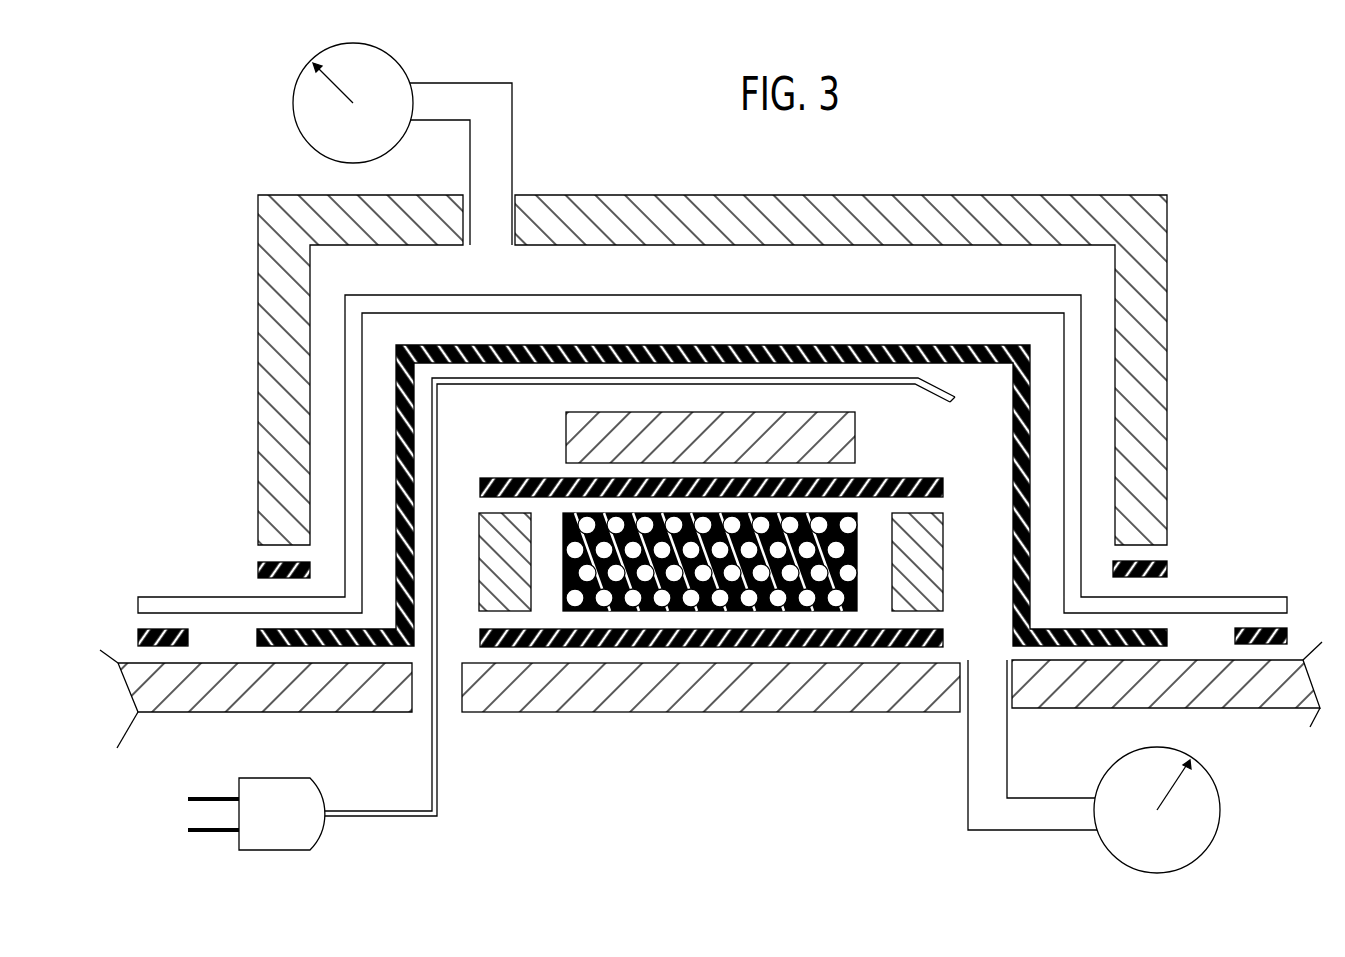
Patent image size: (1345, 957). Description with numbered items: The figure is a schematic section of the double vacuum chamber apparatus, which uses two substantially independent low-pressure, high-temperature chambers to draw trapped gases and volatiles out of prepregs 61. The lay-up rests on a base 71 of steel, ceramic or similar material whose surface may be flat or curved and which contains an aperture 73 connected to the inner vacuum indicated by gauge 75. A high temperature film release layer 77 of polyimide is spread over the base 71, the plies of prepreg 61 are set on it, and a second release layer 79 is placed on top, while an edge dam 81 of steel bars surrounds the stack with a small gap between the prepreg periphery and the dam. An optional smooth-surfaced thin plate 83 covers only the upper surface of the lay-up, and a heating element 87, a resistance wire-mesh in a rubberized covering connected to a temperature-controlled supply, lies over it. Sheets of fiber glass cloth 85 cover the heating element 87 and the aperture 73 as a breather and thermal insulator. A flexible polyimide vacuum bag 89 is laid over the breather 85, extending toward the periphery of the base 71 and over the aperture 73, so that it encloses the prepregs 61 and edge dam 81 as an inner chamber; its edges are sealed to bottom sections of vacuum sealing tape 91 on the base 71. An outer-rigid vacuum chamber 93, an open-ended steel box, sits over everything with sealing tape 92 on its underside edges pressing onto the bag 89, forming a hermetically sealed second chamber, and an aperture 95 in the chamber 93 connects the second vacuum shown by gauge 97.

The prepregs 61 is at (790, 600).
The base 71 is at (612, 712).
The aperture 73 is at (1007, 688).
The gauge 75 is at (1222, 792).
The high temperature film release layer 77 is at (720, 645).
The second release layer 79 is at (480, 482).
The edge dam 81 is at (525, 605).
The smooth-surfaced thin plate 83 is at (835, 425).
The fiber glass cloth 85 is at (797, 300).
The heating element 87 is at (652, 375).
The vacuum bag 89 is at (350, 432).
The vacuum sealing tape 91 is at (138, 637).
The sealing tape 92 is at (258, 570).
The outer-rigid vacuum chamber 93 is at (1037, 218).
The aperture 95 is at (512, 217).
The gauge 97 is at (400, 73).